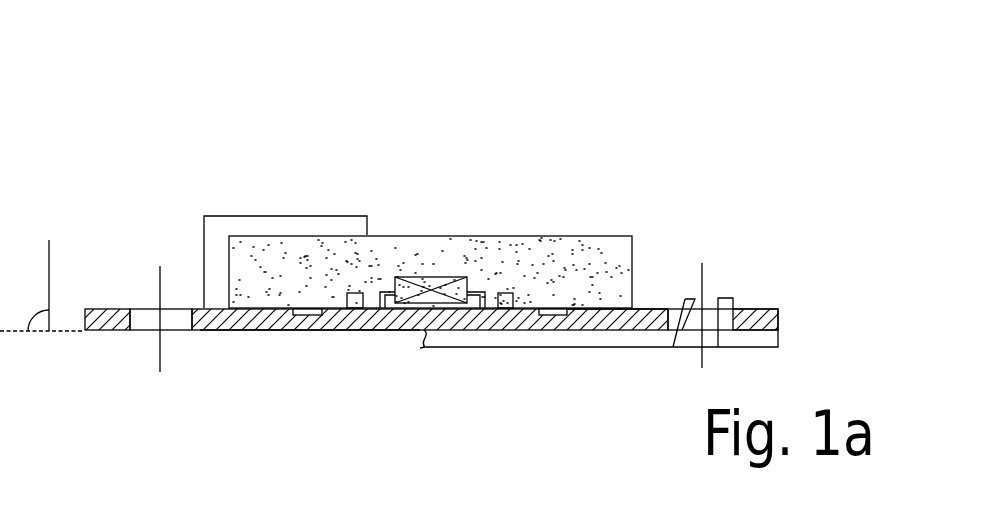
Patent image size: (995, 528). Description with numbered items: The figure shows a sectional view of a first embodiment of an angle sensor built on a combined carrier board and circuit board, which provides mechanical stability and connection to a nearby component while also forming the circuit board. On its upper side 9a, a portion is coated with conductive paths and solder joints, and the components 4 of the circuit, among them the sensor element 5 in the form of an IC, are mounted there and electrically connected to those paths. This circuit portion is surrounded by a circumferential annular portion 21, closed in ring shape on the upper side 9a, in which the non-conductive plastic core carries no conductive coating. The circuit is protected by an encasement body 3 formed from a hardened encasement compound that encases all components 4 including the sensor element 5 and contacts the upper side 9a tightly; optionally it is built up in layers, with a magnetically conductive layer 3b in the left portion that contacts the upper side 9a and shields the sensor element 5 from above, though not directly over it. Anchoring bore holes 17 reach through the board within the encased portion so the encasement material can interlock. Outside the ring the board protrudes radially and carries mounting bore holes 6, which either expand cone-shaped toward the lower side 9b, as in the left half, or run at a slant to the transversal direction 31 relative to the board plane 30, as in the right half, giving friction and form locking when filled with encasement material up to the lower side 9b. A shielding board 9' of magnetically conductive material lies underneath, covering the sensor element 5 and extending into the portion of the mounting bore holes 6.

The encasement body 3 is at (621, 248).
The layer of encasement body 3b is at (220, 298).
The components 4 is at (357, 293).
The sensor element 5 is at (430, 280).
The mounting bore holes 6 is at (158, 277).
The upper side 9a is at (652, 308).
The lower side 9b is at (301, 331).
The shielding board 9' is at (599, 393).
The anchoring bore holes 17 is at (245, 313).
The annular portion 21 is at (308, 315).
The board plane 30 is at (49, 331).
The transversal direction 31 is at (49, 272).